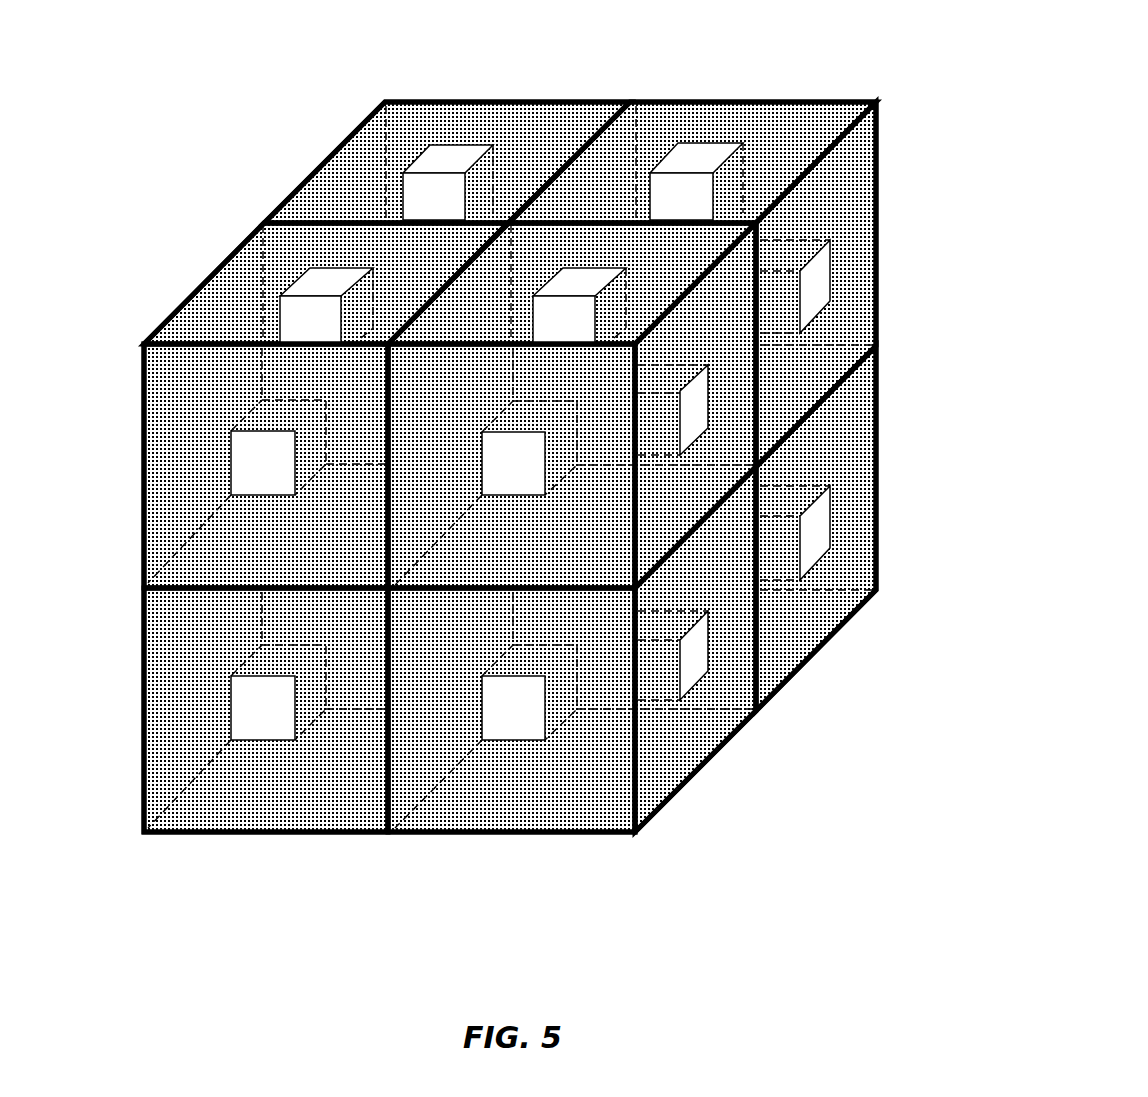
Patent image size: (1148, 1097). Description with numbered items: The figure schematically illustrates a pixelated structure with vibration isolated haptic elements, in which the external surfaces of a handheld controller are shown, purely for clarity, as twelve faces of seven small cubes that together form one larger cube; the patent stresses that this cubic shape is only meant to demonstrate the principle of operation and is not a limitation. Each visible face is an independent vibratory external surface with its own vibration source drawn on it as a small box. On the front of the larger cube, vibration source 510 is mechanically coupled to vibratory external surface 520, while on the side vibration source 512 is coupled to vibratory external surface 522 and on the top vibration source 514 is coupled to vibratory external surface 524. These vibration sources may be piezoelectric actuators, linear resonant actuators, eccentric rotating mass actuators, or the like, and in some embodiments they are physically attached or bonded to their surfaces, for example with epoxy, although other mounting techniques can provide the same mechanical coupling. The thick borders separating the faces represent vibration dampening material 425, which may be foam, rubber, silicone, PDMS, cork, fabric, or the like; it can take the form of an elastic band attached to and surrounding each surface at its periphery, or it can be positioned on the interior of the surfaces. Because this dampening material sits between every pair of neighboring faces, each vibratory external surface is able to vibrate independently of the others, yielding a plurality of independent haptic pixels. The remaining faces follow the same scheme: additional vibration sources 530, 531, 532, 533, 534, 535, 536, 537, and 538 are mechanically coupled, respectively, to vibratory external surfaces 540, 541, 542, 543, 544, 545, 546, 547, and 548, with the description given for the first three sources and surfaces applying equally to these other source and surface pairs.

The vibration dampening material 425 is at (405, 340).
The vibration source 510 is at (510, 487).
The vibration source 512 is at (692, 437).
The vibration source 514 is at (598, 262).
The vibratory external surface 520 is at (607, 551).
The vibratory external surface 522 is at (711, 332).
The vibratory external surface 524 is at (677, 252).
The vibration source 530 is at (265, 732).
The vibration source 531 is at (503, 732).
The vibration source 532 is at (690, 667).
The vibration source 533 is at (818, 560).
The vibration source 534 is at (820, 307).
The vibration source 535 is at (723, 135).
The vibration source 536 is at (441, 137).
The vibration source 537 is at (345, 262).
The vibration source 538 is at (270, 487).
The vibratory external surface 540 is at (268, 780).
The vibratory external surface 541 is at (517, 757).
The vibratory external surface 542 is at (732, 581).
The vibratory external surface 543 is at (835, 428).
The vibratory external surface 544 is at (800, 200).
The vibratory external surface 545 is at (750, 123).
The vibratory external surface 546 is at (557, 132).
The vibratory external surface 547 is at (444, 244).
The vibratory external surface 548 is at (203, 418).